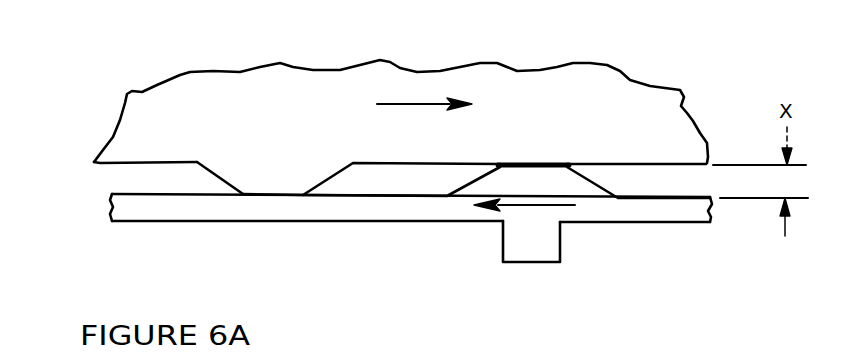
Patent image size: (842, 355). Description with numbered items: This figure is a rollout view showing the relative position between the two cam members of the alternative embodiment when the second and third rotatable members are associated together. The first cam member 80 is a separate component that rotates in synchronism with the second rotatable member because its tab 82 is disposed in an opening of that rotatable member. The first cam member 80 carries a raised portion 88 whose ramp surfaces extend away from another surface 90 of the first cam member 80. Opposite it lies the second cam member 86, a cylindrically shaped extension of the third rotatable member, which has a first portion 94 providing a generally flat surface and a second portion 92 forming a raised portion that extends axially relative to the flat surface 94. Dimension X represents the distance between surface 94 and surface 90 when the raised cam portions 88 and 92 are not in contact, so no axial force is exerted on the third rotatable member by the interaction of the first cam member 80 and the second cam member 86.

The first cam member 80 is at (320, 213).
The tab 82 is at (533, 247).
The second cam member 86 is at (348, 92).
The raised portion 88 is at (547, 178).
The surface of the first cam member 90 is at (355, 196).
The second portion 92 is at (220, 177).
The first portion 94 is at (112, 167).